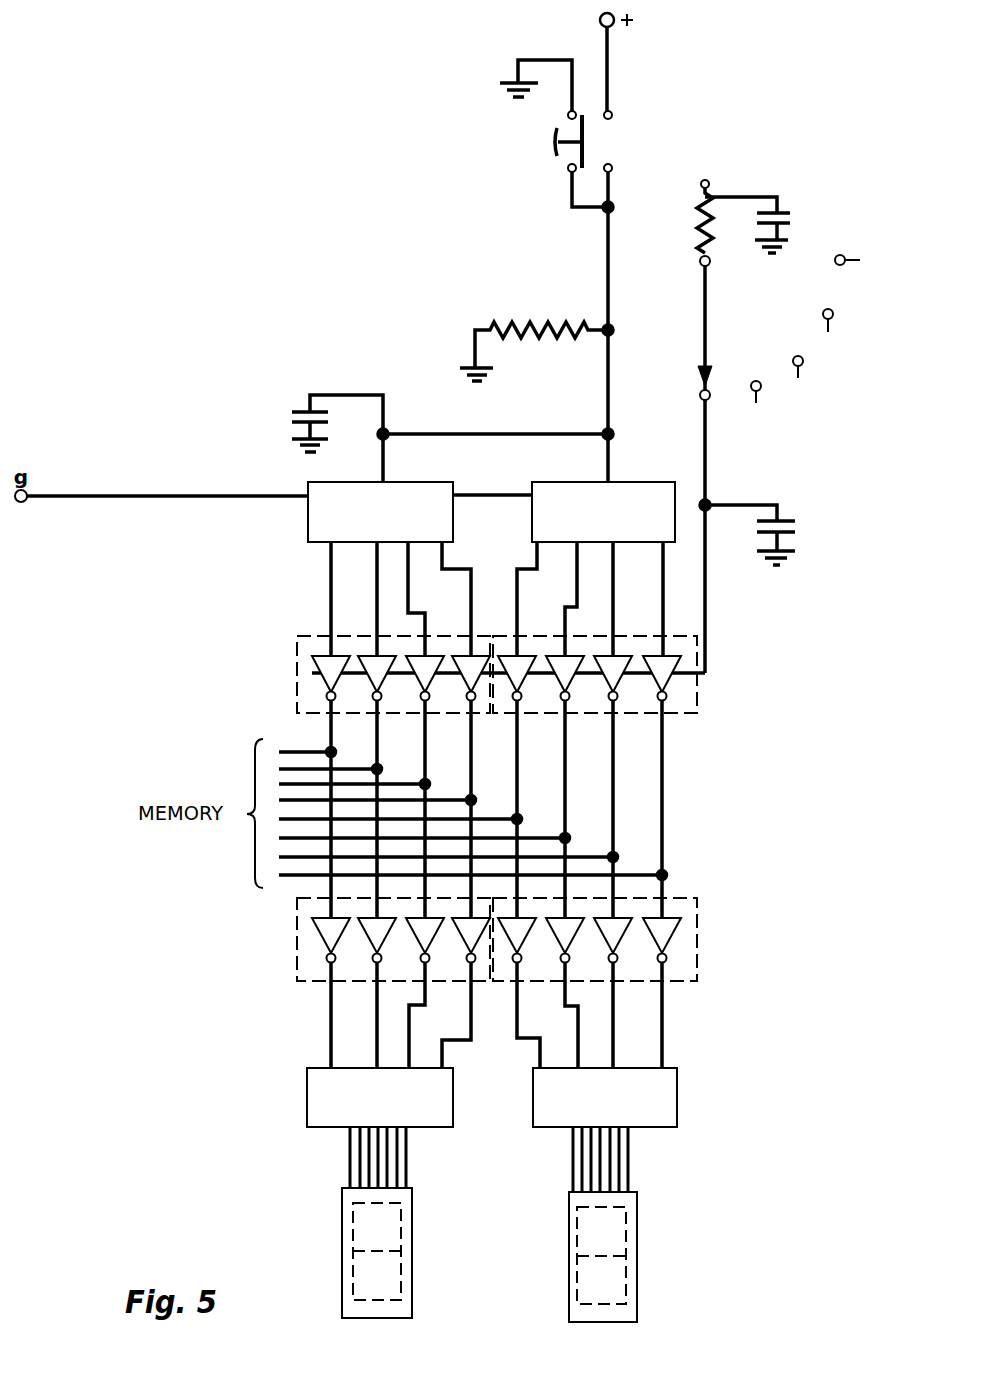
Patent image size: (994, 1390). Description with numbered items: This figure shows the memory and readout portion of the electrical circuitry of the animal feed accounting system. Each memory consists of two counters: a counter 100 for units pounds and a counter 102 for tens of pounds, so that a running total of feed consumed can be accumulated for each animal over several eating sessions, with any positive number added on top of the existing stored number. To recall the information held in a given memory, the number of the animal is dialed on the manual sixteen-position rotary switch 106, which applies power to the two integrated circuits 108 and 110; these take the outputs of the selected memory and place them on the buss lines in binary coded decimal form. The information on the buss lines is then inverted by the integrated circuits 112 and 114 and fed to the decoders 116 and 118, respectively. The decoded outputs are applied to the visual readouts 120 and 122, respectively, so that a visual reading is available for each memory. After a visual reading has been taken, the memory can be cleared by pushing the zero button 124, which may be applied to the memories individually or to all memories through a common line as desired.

The counter 100 is at (650, 487).
The counter 102 is at (443, 486).
The manual 16-position rotary switch 106 is at (704, 288).
The integrated circuit 108 is at (691, 705).
The integrated circuit 110 is at (297, 668).
The integrated circuit 112 is at (697, 935).
The integrated circuit 114 is at (297, 947).
The decoder 116 is at (677, 1100).
The decoder 118 is at (307, 1100).
The visual readout 120 is at (637, 1230).
The visual readout 122 is at (342, 1240).
The zero button 124 is at (555, 142).